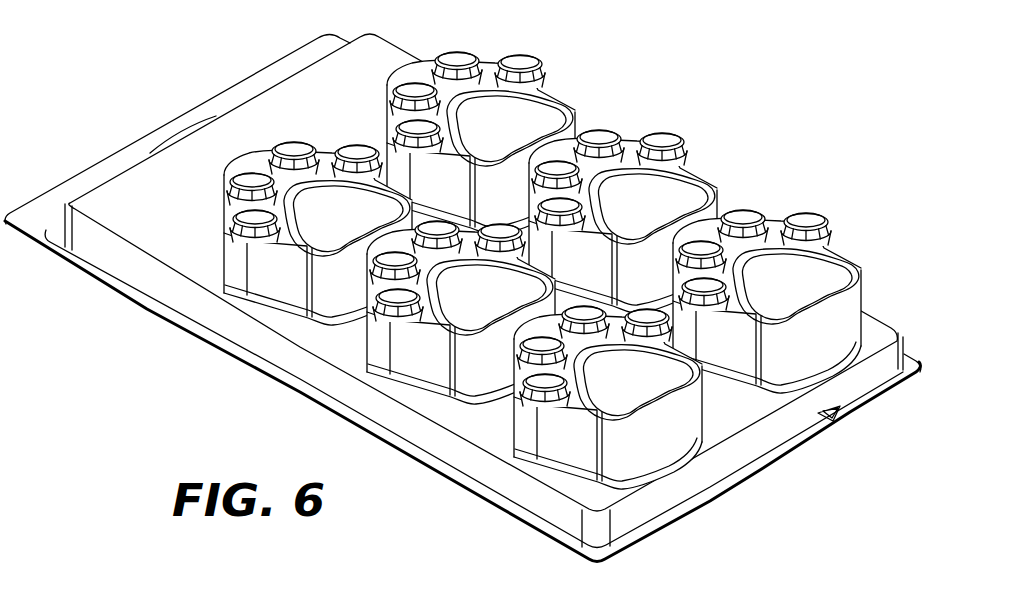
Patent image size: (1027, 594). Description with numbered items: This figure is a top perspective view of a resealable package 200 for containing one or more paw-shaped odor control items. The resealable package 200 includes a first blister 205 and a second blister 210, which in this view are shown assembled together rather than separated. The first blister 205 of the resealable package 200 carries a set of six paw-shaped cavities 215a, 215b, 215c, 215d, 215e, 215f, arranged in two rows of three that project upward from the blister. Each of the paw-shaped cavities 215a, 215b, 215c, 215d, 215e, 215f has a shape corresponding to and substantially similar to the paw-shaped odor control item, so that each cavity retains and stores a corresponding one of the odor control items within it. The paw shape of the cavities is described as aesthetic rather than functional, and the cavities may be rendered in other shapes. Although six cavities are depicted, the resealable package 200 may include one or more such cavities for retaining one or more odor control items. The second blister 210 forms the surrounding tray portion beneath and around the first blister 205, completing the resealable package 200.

The resealable package 200 is at (832, 460).
The first blister 205 is at (106, 181).
The second blister 210 is at (147, 311).
The paw-shaped cavity 215a is at (569, 99).
The paw-shaped cavity 215b is at (717, 183).
The paw-shaped cavity 215c is at (827, 254).
The paw-shaped cavity 215d is at (268, 313).
The paw-shaped cavity 215e is at (404, 395).
The paw-shaped cavity 215f is at (541, 474).